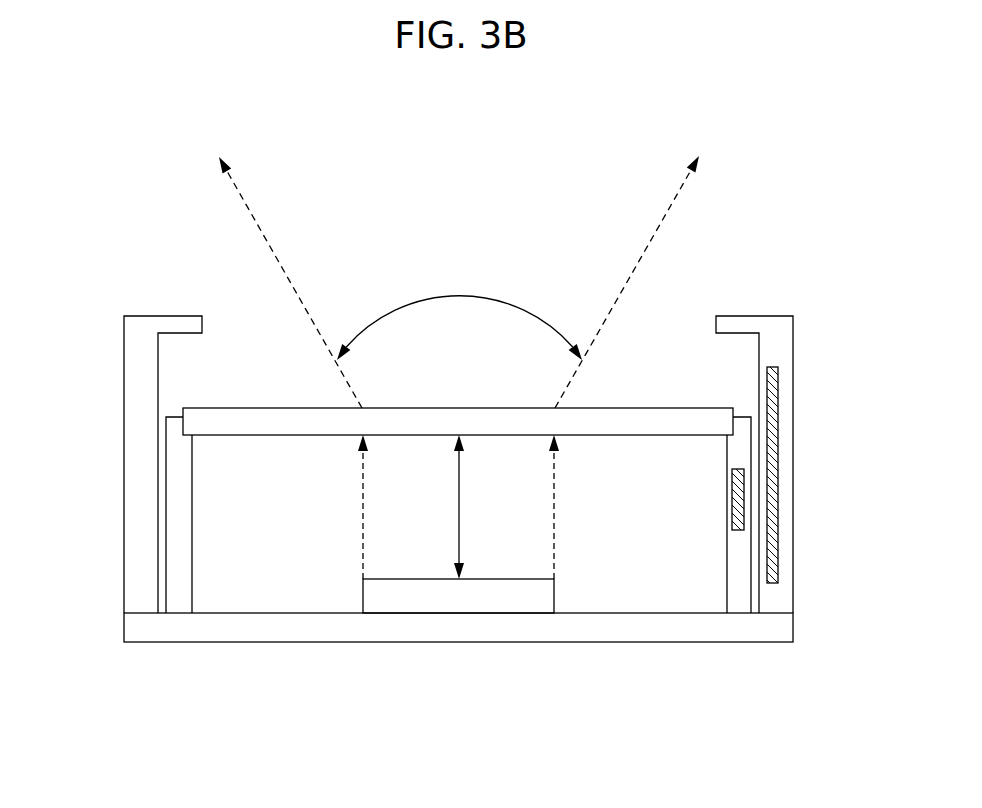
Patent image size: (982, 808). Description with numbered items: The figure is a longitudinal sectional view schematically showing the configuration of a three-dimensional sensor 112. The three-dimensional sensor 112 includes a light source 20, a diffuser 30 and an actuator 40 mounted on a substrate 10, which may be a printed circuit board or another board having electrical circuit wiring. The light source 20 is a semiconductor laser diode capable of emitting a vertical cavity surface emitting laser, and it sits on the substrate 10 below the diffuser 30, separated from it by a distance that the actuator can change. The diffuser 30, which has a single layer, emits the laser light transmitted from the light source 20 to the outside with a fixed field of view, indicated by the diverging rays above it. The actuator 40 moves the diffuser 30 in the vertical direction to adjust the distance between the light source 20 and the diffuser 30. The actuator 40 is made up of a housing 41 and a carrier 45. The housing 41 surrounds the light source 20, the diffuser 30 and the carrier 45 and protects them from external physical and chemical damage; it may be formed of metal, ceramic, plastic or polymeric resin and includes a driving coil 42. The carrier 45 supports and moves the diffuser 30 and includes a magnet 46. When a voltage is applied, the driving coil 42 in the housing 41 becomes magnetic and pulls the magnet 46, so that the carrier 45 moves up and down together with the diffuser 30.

The substrate 10 is at (783, 630).
The light source 20 is at (457, 600).
The diffuser 30 is at (273, 409).
The actuator 40 is at (413, 464).
The housing 41 is at (134, 445).
The driving coil 42 is at (778, 433).
The carrier 45 is at (77, 443).
The magnet 46 is at (737, 498).
The 3D sensor 112 is at (440, 168).